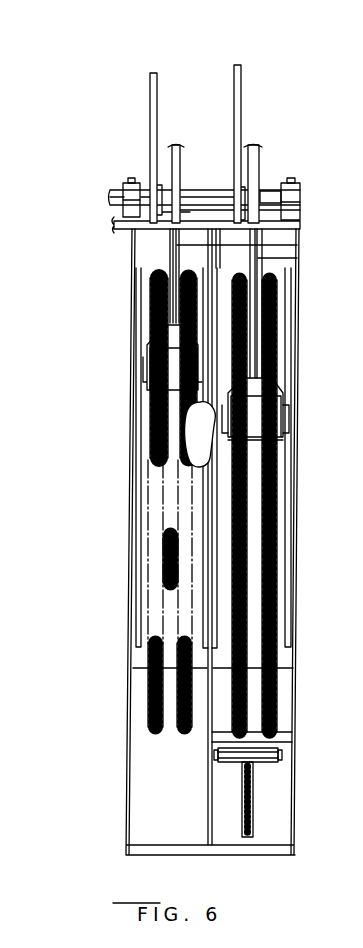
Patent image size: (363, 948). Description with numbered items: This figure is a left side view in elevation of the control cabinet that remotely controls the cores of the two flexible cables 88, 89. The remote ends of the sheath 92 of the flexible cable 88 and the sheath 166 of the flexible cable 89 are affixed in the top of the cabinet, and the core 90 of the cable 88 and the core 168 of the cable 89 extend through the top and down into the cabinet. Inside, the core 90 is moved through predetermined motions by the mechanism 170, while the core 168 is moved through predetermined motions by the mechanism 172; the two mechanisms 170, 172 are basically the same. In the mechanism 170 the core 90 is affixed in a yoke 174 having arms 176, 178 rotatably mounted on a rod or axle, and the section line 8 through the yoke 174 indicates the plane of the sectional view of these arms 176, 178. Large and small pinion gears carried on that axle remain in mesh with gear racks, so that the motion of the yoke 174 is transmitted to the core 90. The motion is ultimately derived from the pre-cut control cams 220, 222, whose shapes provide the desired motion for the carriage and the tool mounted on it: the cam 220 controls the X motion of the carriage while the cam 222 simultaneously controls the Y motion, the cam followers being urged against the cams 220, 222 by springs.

The control cam 222 is at (157, 86).
The control cam 220 is at (243, 86).
The sheath 166 is at (168, 157).
The flexible cable 89 is at (184, 152).
The flexible cable 88 is at (264, 152).
The sheath 92 is at (262, 172).
The core 168 is at (297, 245).
The core 90 is at (297, 258).
The mechanism 172 is at (194, 333).
The arm 178 is at (222, 382).
The yoke 174 is at (268, 371).
The arm 176 is at (288, 406).
The mechanism 170 is at (282, 443).
The section line 8- 8 is at (205, 406).